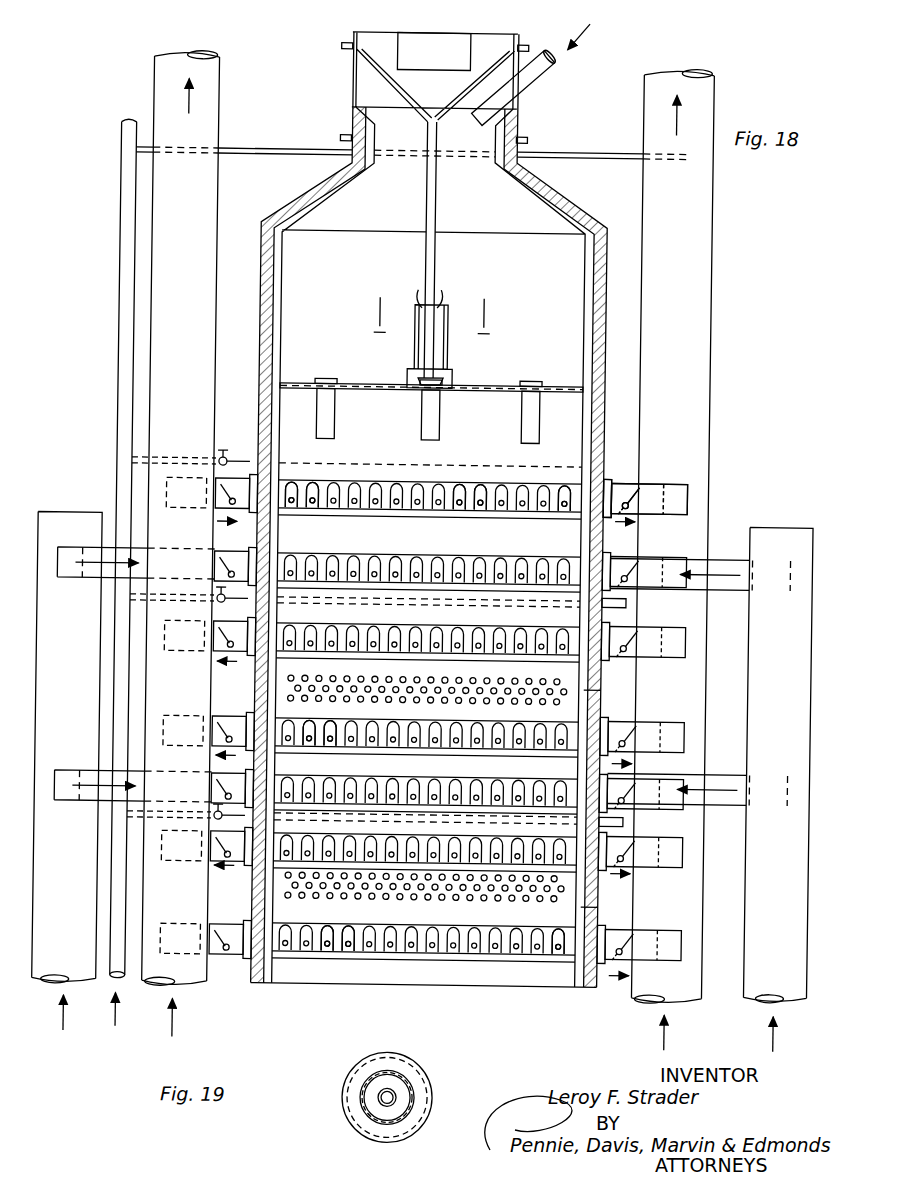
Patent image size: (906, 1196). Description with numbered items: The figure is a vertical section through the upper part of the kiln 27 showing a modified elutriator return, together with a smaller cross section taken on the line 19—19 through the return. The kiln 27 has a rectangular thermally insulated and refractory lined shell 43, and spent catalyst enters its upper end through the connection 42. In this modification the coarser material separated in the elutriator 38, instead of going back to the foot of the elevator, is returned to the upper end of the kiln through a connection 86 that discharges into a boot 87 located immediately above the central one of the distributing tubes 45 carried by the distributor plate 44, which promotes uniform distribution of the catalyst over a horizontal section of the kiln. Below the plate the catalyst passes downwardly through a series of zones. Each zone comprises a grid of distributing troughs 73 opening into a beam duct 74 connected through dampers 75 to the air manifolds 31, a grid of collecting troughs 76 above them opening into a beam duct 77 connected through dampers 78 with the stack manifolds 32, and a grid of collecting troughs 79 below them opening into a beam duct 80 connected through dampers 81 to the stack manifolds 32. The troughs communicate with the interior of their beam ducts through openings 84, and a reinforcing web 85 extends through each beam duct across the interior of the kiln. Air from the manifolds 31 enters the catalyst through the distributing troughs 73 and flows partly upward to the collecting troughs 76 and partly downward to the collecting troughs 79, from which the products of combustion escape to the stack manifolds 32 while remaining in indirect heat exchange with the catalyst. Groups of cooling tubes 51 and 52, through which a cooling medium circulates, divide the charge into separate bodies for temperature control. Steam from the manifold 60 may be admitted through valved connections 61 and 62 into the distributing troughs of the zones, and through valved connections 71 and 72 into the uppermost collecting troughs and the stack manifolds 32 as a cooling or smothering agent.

In FIG. 18, the kiln 27 is at (300, 204).
In FIG. 18, the air manifolds 31 is at (55, 975).
In FIG. 18, the stack manifolds 32 is at (160, 74).
In FIG. 18, the elutriator 38 is at (427, 73).
In FIG. 18, the connection 42 is at (540, 87).
In FIG. 18, the shell 43 is at (266, 306).
In FIG. 18, the distributor plate 44 is at (296, 384).
In FIG. 18, the distributing tubes 45 is at (333, 420).
In FIG. 18, the cooling tubes 51 is at (592, 688).
In FIG. 18, the cooling tubes 52 is at (590, 905).
In FIG. 18, the steam manifold 60 is at (116, 181).
In FIG. 18, the valved connection 61 is at (628, 600).
In FIG. 18, the valved connection 62 is at (628, 820).
In FIG. 18, the valved connection 71 is at (234, 449).
In FIG. 18, the valved connection 72 is at (256, 149).
In FIG. 18, the distributing troughs 73 is at (298, 556).
In FIG. 18, the beam duct 74 is at (488, 554).
In FIG. 18, the dampers 75 is at (648, 546).
In FIG. 18, the collecting troughs 76 is at (314, 490).
In FIG. 18, the beam duct 77 is at (425, 517).
In FIG. 18, the dampers 78 is at (220, 497).
In FIG. 18, the collecting troughs 79 is at (350, 632).
In FIG. 18, the beam duct 80 is at (480, 879).
In FIG. 18, the dampers 81 is at (222, 636).
In FIG. 18, the openings 84 is at (474, 486).
In FIG. 18, the reinforcing web 85 is at (566, 484).
In FIG. 18, the connection 86 is at (438, 272).
In FIG. 19, the connection 86 is at (388, 1105).
In FIG. 18, the boot 87 is at (446, 359).
In FIG. 19, the boot 87 is at (370, 1105).
In FIG. 18, the section line 19 is at (429, 318).